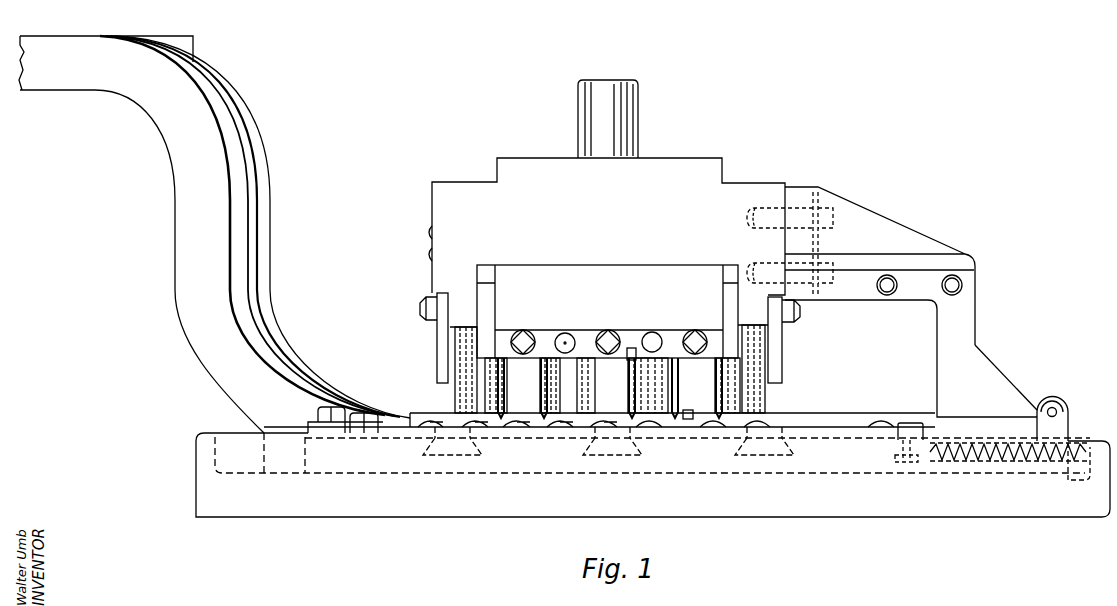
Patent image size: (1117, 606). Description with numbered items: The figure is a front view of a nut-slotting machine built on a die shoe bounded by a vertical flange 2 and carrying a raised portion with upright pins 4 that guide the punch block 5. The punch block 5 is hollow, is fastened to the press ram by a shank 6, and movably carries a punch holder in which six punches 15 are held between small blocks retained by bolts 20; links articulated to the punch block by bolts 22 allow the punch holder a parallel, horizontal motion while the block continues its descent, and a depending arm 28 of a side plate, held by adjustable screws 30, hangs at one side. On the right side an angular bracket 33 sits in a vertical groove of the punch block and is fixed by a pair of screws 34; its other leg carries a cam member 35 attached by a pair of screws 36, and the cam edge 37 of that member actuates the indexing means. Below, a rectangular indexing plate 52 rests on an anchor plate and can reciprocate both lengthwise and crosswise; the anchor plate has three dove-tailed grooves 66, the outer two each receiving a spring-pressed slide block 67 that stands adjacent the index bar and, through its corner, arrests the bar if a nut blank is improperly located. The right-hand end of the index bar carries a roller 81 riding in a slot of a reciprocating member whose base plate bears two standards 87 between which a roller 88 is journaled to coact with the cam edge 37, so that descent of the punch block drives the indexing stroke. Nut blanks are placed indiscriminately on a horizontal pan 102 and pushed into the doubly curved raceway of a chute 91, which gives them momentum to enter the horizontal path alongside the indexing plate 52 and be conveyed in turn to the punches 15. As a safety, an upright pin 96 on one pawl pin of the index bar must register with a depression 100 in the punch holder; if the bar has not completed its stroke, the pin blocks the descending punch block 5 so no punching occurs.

The vertical flange 2 is at (208, 440).
The upright pins 4 is at (497, 402).
The punch block 5 is at (703, 170).
The shank 6 is at (633, 124).
The punches 15 is at (502, 364).
The bolts 20 is at (524, 341).
The bolts 22 is at (428, 236).
The depending arm 28 is at (443, 348).
The screws 30 is at (419, 310).
The angular bracket 33 is at (905, 244).
The screws 34 is at (828, 262).
The cam member 35 is at (967, 339).
The screws 36 is at (885, 295).
The cam edge 37 is at (997, 383).
The indexing plate 52 is at (385, 421).
The dove-tailed grooves 66 is at (472, 460).
The slide block 67 is at (770, 428).
The roller 81 is at (902, 462).
The standards 87 is at (1066, 430).
The roller 88 is at (1056, 402).
The chute 91 is at (262, 220).
The upright pin 96 is at (687, 410).
The depression 100 is at (633, 348).
The horizontal pan 102 is at (190, 52).